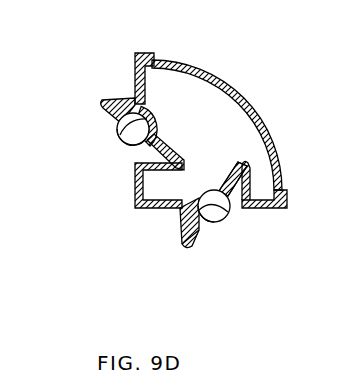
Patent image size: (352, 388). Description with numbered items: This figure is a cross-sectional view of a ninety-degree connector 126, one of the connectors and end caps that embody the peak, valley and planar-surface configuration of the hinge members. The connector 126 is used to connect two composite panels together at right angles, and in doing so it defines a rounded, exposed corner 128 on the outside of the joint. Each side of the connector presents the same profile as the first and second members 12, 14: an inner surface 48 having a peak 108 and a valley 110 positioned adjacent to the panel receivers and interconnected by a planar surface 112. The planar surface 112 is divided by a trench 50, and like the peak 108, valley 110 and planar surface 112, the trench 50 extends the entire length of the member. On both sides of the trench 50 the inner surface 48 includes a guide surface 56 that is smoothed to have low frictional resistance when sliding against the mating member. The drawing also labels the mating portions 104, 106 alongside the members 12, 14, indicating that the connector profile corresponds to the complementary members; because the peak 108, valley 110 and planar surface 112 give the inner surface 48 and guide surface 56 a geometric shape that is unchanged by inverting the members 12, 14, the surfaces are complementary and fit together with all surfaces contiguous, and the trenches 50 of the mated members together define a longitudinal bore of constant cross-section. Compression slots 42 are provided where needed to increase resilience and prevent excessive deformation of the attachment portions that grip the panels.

The first member 12 is at (180, 212).
The second member 14 is at (142, 150).
The compression slot 42 is at (202, 234).
The inner surface 48 is at (115, 115).
The trench 50 is at (143, 118).
The guide surface 56 is at (132, 148).
The first hinge part 104 is at (180, 212).
The second hinge part 106 is at (180, 212).
The peak 108 is at (99, 104).
The valley 110 is at (226, 184).
The planar surface 112 is at (131, 168).
The 90° connector 126 is at (213, 76).
The rounded, exposed corner 128 is at (268, 130).